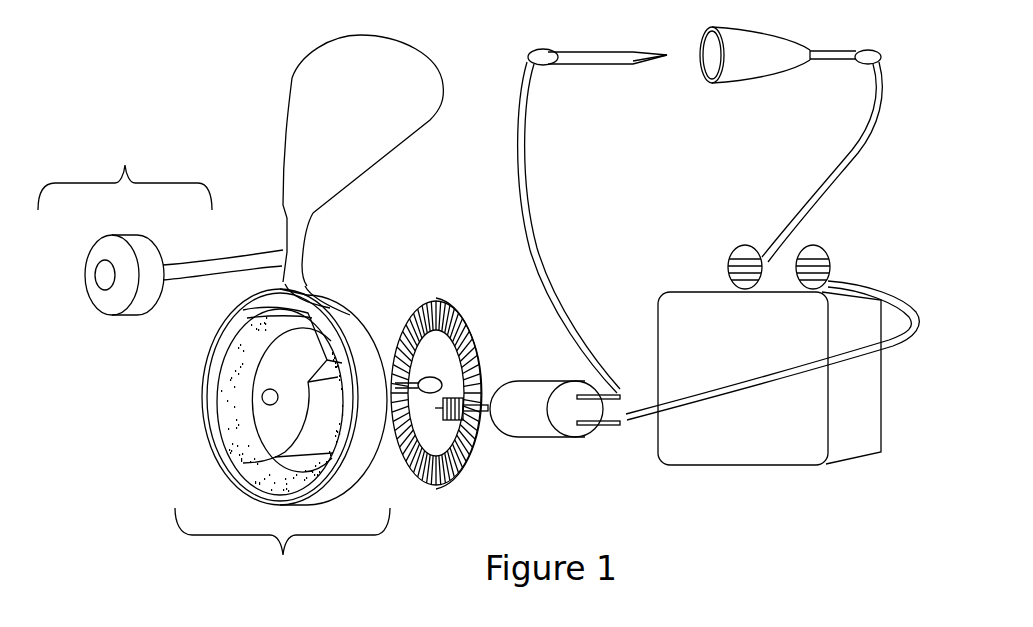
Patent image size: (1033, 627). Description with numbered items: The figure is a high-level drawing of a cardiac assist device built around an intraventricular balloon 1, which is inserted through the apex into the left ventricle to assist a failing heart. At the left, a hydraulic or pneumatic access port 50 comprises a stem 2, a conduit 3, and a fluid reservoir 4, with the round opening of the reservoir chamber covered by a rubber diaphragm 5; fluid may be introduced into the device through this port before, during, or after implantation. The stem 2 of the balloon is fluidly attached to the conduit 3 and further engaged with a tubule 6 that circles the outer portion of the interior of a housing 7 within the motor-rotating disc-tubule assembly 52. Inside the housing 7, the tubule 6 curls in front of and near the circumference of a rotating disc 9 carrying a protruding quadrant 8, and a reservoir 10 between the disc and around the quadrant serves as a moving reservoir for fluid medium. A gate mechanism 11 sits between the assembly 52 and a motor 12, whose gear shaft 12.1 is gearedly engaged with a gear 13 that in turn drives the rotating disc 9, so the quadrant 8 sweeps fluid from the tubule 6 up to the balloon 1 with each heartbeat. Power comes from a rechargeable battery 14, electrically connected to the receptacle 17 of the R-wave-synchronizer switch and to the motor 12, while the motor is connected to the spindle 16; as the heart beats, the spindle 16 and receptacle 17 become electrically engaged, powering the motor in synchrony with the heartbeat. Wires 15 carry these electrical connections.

The intraventricular balloon 1 is at (292, 78).
The stem 2 is at (307, 228).
The conduit 3 is at (212, 268).
The fluid reservoir 4 is at (110, 236).
The rubber diaphragm 5 is at (95, 273).
The hydraulic access port 50 is at (125, 178).
The motor-rotating disc-tubule assembly 52 is at (282, 545).
The tubule 6 is at (350, 288).
The housing 7 is at (202, 358).
The protruding quadrant 8 is at (220, 322).
The rotating disc 9 is at (270, 430).
The reservoir 10 is at (227, 447).
The gate mechanism 11 is at (262, 398).
The motor 12 is at (542, 434).
The gear shaft 12.1 is at (483, 427).
The gear 13 is at (442, 302).
The rechargeable battery 14 is at (753, 466).
The wire 15 is at (523, 180).
The spindle 16 is at (603, 65).
The receptacle 17 is at (802, 64).